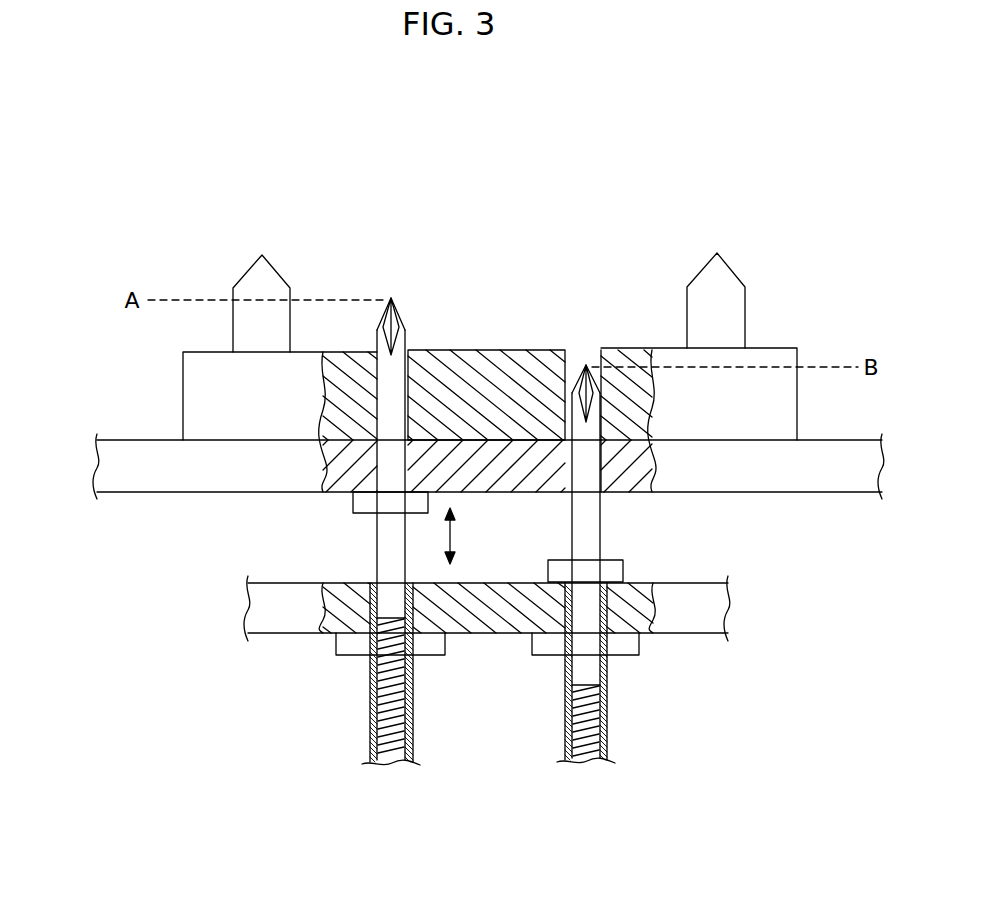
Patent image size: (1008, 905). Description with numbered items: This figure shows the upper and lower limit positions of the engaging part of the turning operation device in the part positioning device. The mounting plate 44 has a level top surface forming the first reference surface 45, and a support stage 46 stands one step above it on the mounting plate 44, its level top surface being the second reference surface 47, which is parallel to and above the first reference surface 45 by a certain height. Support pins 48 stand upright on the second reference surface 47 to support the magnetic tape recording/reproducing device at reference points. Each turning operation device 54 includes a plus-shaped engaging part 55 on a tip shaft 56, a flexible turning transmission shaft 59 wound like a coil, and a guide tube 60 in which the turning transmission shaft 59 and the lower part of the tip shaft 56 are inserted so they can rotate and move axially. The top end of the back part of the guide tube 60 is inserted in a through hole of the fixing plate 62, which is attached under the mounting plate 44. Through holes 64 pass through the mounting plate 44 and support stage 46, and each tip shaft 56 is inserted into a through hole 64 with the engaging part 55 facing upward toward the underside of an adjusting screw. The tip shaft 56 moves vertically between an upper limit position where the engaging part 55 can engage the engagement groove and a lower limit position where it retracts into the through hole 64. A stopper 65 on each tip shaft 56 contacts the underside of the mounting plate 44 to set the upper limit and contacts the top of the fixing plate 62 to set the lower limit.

The mounting plate 44 is at (118, 470).
The first reference surface 45 is at (140, 440).
The support stage 46 is at (763, 405).
The second reference surface 47 is at (507, 350).
The support pin 48 is at (262, 255).
The turning operation device 54 is at (552, 715).
The engaging part 55 is at (392, 298).
The tip shaft 56 is at (405, 335).
The turning transmission shaft 59 is at (388, 747).
The guide tube 60 is at (372, 717).
The fixing plate 62 is at (273, 625).
The through hole 64 is at (376, 352).
The stopper 65 is at (353, 512).